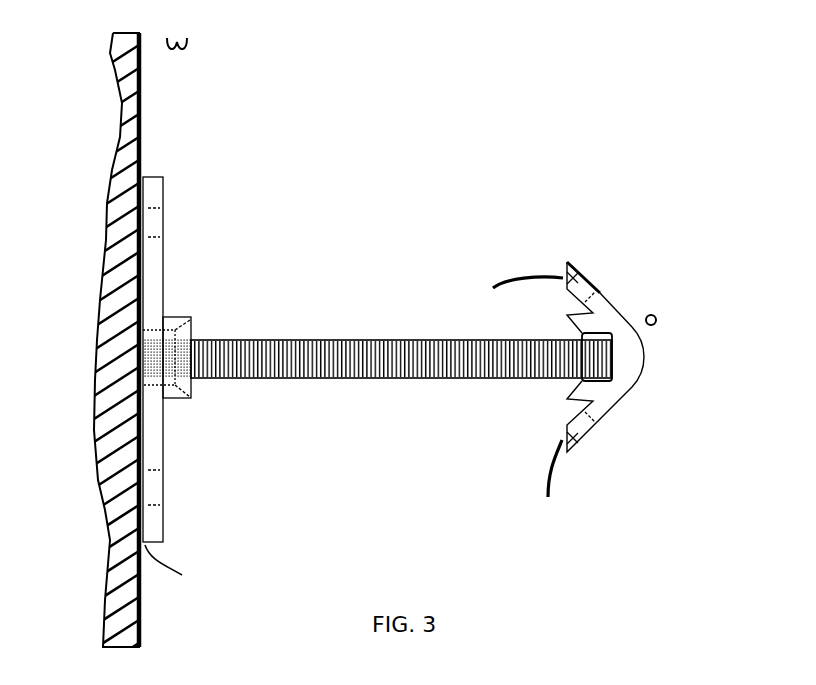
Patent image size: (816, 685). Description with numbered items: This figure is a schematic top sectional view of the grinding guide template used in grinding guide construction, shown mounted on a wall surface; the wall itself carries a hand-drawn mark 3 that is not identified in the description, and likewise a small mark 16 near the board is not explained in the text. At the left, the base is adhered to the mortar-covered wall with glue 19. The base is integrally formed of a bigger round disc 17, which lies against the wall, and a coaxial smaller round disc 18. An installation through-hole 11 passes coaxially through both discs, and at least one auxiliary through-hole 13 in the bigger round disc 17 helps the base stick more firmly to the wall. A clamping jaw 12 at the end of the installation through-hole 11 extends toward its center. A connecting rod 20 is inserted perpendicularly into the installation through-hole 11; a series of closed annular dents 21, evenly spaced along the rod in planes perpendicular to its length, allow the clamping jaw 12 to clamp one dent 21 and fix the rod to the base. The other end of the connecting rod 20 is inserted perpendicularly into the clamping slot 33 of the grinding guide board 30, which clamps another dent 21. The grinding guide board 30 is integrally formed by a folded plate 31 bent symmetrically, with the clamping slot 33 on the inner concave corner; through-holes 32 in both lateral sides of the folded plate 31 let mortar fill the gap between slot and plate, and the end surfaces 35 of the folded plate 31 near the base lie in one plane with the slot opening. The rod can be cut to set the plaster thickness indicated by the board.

The wall 3 is at (163, 48).
The installation through-hole 11 is at (175, 338).
The clamping jaw 12 is at (190, 328).
The auxiliary through-hole 13 is at (152, 225).
The hole 16 is at (657, 320).
The bigger round disc 17 is at (152, 273).
The smaller round disc 18 is at (178, 398).
The glue 19 is at (175, 568).
The connecting rod 20 is at (383, 377).
The closed annular dent 21 is at (292, 362).
The grinding guide board 30 is at (645, 349).
The folded plate 31 is at (604, 295).
The through-hole 32 is at (565, 275).
The clamping slot 33 is at (613, 333).
The end surface 35 is at (507, 401).